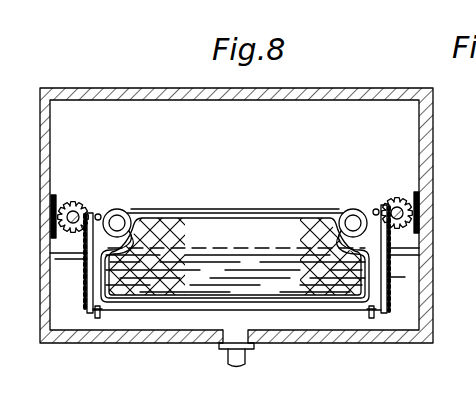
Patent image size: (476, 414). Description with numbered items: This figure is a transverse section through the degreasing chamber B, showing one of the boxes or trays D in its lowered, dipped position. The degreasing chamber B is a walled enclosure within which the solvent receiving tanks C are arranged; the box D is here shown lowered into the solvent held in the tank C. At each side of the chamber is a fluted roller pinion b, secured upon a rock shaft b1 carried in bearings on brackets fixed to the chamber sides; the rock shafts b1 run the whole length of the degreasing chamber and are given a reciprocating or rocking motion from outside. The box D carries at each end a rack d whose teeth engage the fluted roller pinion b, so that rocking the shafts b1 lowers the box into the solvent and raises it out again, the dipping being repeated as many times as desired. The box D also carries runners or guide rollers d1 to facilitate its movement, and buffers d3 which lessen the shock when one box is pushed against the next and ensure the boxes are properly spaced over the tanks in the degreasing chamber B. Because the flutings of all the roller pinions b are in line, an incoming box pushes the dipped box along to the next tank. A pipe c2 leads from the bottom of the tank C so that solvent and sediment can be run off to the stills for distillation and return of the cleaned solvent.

The degreasing chamber B is at (236, 216).
The solvent receiving tanks C is at (234, 288).
The boxes or trays D is at (235, 257).
The fluted roller pinions b is at (88, 213).
The rock shafts b1 is at (446, 216).
The racks d is at (88, 270).
The runners or guide rollers d1 is at (371, 318).
The buffers d3 is at (117, 223).
The pipes c2 is at (240, 366).